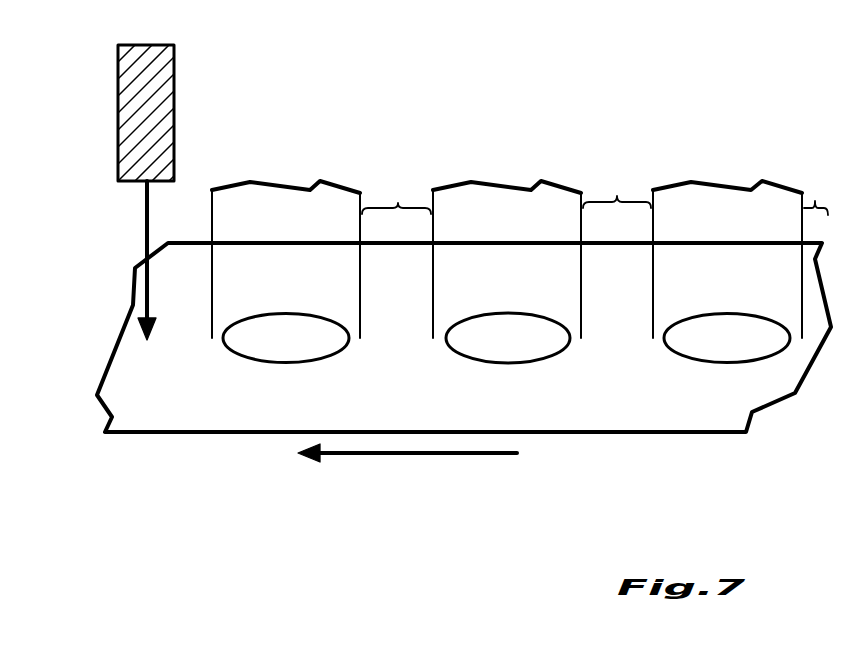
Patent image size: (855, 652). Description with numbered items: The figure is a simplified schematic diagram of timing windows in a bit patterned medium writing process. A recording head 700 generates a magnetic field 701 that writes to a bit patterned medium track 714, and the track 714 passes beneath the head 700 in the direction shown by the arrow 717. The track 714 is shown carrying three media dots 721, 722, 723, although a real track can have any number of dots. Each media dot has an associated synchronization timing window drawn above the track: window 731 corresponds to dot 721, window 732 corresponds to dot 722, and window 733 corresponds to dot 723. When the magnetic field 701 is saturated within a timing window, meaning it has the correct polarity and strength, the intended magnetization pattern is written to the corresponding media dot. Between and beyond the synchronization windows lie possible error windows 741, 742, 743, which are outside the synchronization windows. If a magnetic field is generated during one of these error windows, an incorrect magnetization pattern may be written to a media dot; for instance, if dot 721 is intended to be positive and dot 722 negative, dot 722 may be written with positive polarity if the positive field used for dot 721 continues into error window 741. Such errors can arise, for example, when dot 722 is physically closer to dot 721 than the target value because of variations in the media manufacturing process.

The recording head 700 is at (183, 92).
The magnetic field 701 is at (147, 243).
The bit patterned medium track 714 is at (108, 343).
The arrow 717 is at (408, 453).
The media dot 721 is at (270, 343).
The media dot 722 is at (470, 343).
The media dot 723 is at (738, 338).
The synchronization timing window 731 is at (250, 182).
The synchronization timing window 732 is at (476, 182).
The synchronization timing window 733 is at (688, 182).
The possible error window 741 is at (396, 197).
The possible error window 742 is at (617, 189).
The possible error window 743 is at (826, 193).